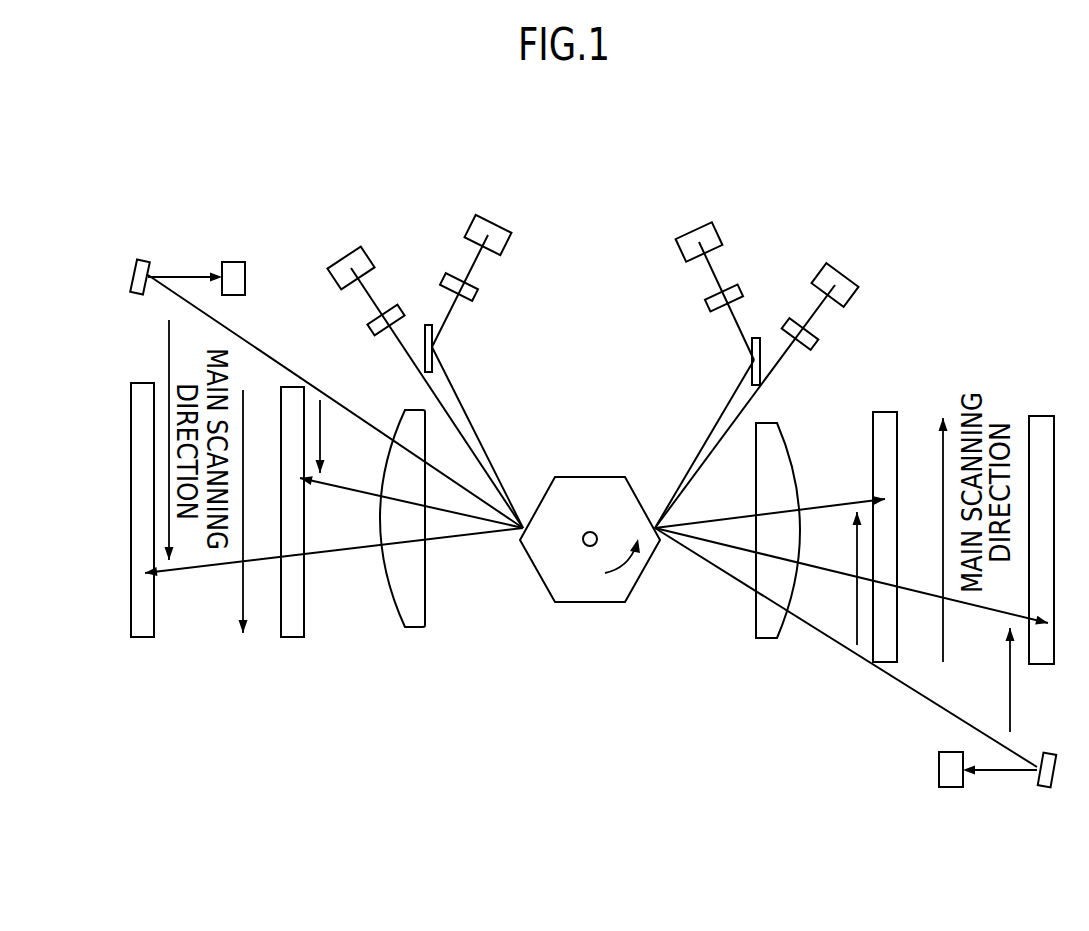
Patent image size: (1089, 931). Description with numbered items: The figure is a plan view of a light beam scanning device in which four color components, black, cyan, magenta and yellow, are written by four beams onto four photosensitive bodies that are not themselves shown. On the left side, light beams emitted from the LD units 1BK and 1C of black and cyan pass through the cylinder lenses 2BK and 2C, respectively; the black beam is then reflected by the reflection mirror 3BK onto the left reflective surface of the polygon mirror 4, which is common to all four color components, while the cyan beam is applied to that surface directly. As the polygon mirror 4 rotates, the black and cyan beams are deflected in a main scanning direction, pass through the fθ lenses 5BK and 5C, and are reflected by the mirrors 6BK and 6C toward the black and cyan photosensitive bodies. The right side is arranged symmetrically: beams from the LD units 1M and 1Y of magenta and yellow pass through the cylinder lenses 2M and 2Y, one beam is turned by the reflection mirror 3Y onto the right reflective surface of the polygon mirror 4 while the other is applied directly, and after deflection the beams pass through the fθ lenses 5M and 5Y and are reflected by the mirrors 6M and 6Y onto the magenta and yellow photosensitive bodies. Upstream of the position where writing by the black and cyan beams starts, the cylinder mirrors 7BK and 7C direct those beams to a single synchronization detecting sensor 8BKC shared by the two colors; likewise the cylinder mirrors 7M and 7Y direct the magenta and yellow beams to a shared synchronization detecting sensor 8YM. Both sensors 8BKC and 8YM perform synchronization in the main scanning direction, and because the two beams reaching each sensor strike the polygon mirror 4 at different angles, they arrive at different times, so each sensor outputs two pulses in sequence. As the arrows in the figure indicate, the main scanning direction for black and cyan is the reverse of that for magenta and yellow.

The LD unit 1C is at (340, 253).
The LD unit 1BK is at (497, 217).
The LD unit 1Y is at (700, 226).
The LD unit 1M is at (838, 266).
The cylinder lens 2C is at (394, 306).
The cylinder lens 2BK is at (471, 283).
The cylinder lens 2Y is at (718, 293).
The cylinder lens 2M is at (792, 325).
The reflection mirror 3BK is at (433, 347).
The reflection mirror 3Y is at (752, 362).
The polygon mirror 4 is at (591, 477).
The fθ lens 5BK is at (441, 558).
The fθ lens 5C is at (410, 627).
The fθ lens 5M is at (746, 594).
The fθ lens 5Y is at (765, 639).
The mirror 6BK is at (143, 383).
The mirror 6C is at (292, 638).
The mirror 6M is at (880, 662).
The mirror 6Y is at (1052, 416).
The cylinder mirror 7BK is at (135, 242).
The cylinder mirror 7C is at (131, 270).
The cylinder mirror 7Y is at (1022, 813).
The cylinder mirror 7M is at (1043, 788).
The synchronization detecting sensor 8BKC is at (238, 262).
The synchronization detecting sensor 8YM is at (955, 788).